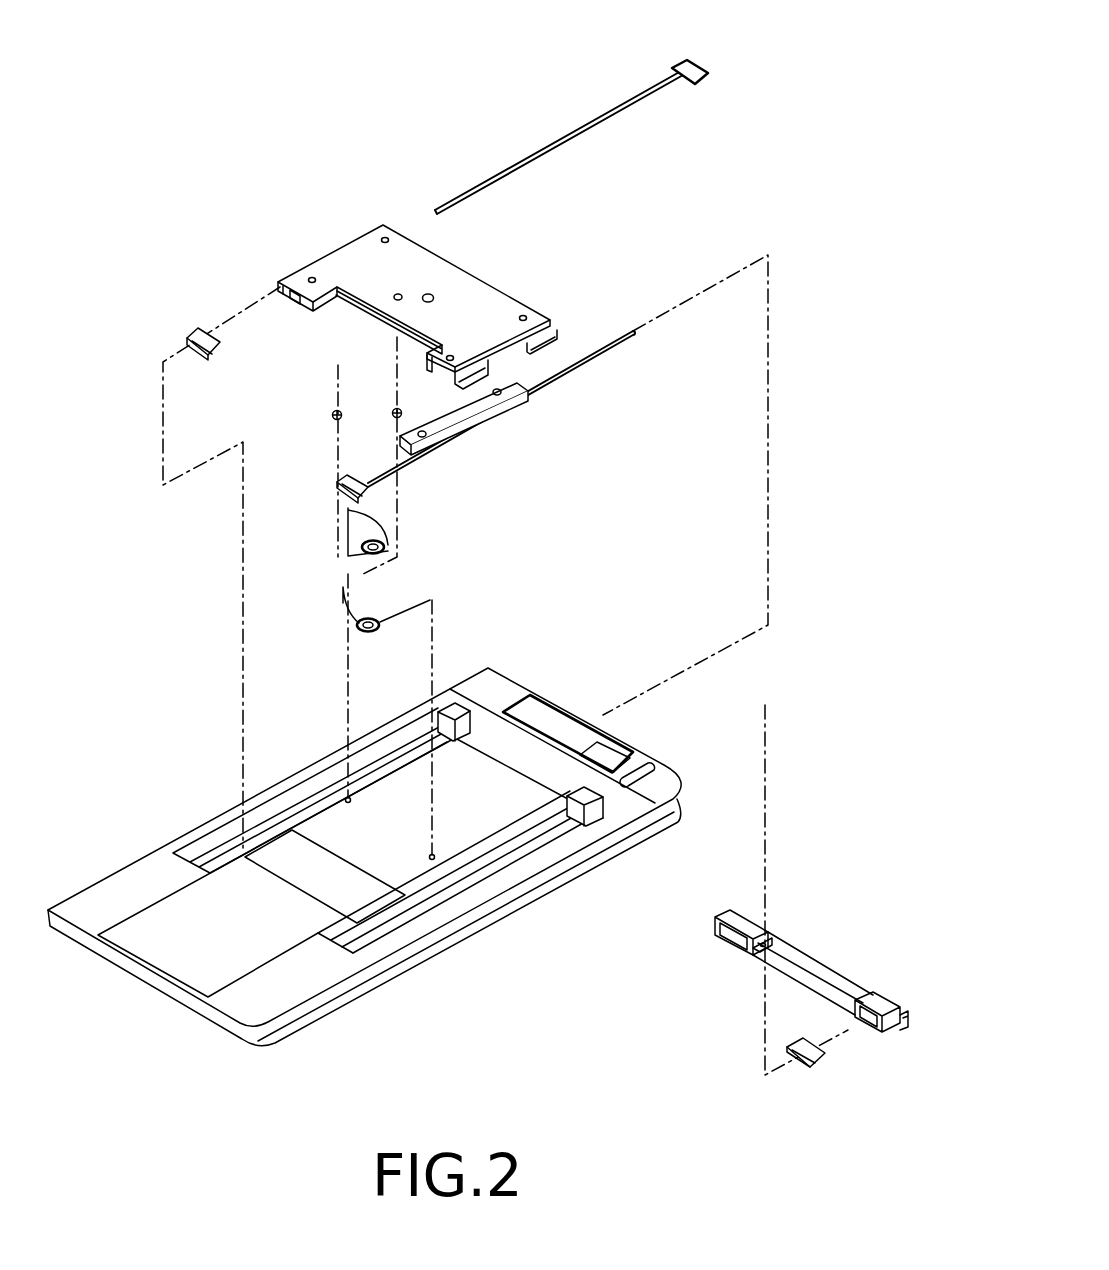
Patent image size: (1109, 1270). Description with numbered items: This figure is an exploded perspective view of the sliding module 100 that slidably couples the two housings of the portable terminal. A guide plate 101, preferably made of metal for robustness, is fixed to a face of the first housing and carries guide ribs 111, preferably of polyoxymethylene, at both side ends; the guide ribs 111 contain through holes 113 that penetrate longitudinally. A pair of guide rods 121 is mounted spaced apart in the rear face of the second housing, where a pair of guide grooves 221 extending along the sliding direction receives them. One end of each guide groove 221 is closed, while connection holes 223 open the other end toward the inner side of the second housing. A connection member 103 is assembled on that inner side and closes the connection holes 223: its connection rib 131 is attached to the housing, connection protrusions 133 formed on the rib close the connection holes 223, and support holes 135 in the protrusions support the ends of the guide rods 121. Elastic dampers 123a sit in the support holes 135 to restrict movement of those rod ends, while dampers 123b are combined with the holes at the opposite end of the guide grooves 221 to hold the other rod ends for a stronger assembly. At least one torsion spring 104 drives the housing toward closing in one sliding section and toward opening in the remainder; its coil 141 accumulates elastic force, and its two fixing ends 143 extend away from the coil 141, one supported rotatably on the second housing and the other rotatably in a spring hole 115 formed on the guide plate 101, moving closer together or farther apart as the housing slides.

The sliding module 100 is at (213, 128).
The guide plate 101 is at (350, 240).
The connection member 103 is at (790, 942).
The torsion spring 104 is at (388, 522).
The guide ribs 111 is at (313, 306).
The through holes 113 is at (282, 275).
The spring hole 115 is at (433, 293).
The guide rods 121 is at (556, 142).
The dampers 123a is at (688, 66).
The dampers 123b is at (188, 338).
The connection rib 131 is at (838, 985).
The connection protrusions 133 is at (736, 916).
The support holes 135 is at (731, 956).
The coil 141 is at (366, 634).
The fixing ends 143 is at (345, 613).
The guide grooves 221 is at (320, 800).
The connection holes 223 is at (462, 716).